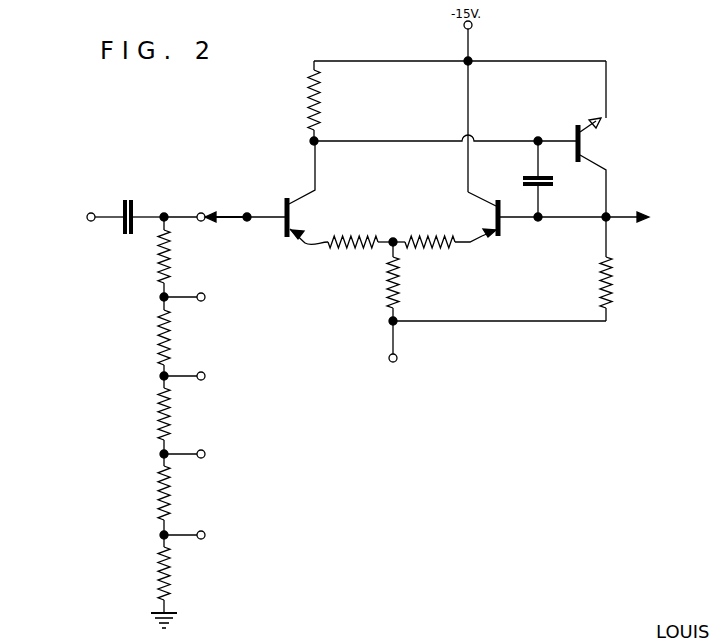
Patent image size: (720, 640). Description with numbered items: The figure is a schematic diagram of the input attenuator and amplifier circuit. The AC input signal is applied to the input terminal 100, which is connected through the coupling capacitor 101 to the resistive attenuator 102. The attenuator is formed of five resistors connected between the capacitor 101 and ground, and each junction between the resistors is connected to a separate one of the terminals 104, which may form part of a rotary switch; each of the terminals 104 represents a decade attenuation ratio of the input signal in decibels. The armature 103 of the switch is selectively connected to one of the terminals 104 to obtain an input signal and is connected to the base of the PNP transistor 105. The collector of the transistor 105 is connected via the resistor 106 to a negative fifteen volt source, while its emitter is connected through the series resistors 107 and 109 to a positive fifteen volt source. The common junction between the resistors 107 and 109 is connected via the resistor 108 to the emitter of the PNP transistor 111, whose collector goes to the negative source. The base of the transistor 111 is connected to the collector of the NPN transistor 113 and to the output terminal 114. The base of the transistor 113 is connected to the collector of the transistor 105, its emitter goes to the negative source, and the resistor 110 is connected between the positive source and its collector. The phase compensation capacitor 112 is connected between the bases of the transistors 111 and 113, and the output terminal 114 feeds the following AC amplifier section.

The input terminal 100 is at (91, 213).
The coupling capacitor 101 is at (128, 198).
The resistive attenuator 102 is at (138, 440).
The armature 103 is at (222, 220).
The terminals 104 is at (206, 376).
The PNP transistor 105 is at (284, 205).
The resistor 106 is at (312, 97).
The resistor 107 is at (373, 240).
The resistor 108 is at (440, 240).
The resistor 109 is at (390, 277).
The resistor 110 is at (613, 283).
The PNP transistor 111 is at (502, 233).
The phase compensation capacitor 112 is at (555, 181).
The NPN transistor 113 is at (576, 135).
The output terminal 114 is at (650, 215).